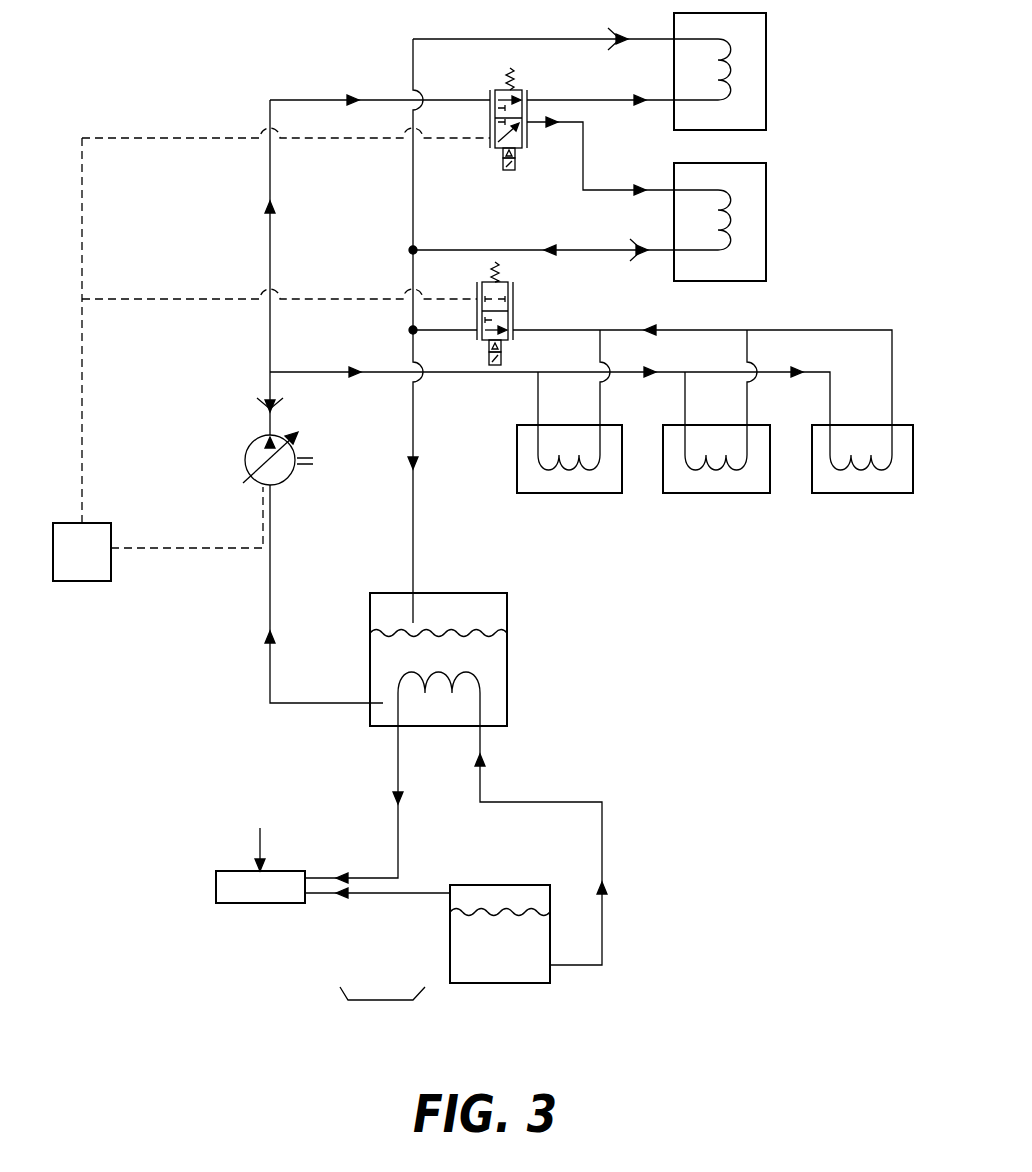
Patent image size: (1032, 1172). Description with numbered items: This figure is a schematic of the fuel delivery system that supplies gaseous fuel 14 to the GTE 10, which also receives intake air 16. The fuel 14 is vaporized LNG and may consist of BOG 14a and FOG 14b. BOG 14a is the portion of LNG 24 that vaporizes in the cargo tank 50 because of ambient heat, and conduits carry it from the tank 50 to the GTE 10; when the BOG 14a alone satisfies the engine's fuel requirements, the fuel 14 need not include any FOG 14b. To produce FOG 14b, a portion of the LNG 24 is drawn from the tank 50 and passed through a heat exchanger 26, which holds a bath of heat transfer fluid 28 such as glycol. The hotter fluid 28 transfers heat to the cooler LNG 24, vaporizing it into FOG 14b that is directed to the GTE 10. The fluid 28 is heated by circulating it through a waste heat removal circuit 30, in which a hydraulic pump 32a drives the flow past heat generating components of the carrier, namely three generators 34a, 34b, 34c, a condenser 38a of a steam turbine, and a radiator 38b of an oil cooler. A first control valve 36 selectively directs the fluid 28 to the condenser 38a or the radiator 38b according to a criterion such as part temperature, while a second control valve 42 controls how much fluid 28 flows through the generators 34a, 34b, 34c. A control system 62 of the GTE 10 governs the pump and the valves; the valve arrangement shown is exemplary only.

The waste heat removal circuit 30 is at (204, 86).
The first control valve 36 is at (490, 117).
The second control valve 42 is at (513, 306).
The condenser 38a is at (766, 70).
The radiator 38b is at (766, 225).
The generator 34a is at (568, 493).
The generator 34b is at (710, 493).
The generator 34c is at (858, 493).
The hydraulic pump 32a is at (250, 448).
The control system 62 is at (82, 581).
The heat exchanger 26 is at (507, 694).
The heat transfer fluid 28 is at (482, 662).
The intake air 16 is at (260, 828).
The GTE 10 is at (262, 903).
The FOG 14b is at (398, 813).
The BOG 14a is at (402, 897).
The fuel 14 is at (382, 1000).
The LNG 24 is at (602, 872).
The cargo tank 50 is at (540, 983).